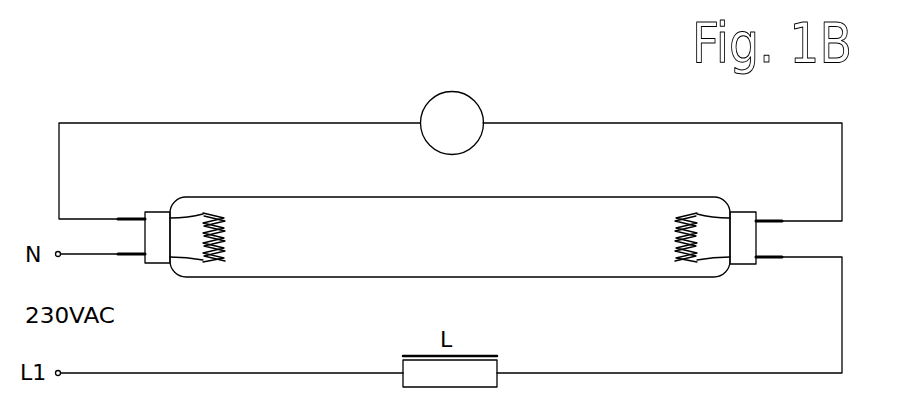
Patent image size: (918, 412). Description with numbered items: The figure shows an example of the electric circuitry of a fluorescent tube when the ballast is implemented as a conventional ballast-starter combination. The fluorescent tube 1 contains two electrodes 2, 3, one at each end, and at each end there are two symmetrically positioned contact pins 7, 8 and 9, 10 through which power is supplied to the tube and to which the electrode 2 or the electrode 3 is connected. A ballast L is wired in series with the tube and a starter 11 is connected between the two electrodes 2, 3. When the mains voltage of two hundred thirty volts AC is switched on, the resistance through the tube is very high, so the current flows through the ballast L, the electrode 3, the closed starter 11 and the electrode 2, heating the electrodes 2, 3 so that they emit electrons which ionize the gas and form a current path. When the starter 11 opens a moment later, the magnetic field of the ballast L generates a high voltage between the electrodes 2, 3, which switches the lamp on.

The fluorescent lamp tube 1 is at (560, 288).
The electrode 2 is at (200, 260).
The electrode 3 is at (705, 259).
The contact pin 7 is at (133, 215).
The contact pin 8 is at (130, 259).
The contact pin 9 is at (770, 220).
The contact pin 10 is at (772, 262).
The starter 11 is at (476, 97).